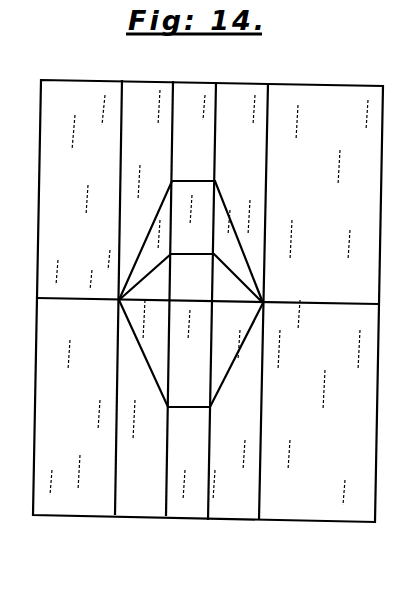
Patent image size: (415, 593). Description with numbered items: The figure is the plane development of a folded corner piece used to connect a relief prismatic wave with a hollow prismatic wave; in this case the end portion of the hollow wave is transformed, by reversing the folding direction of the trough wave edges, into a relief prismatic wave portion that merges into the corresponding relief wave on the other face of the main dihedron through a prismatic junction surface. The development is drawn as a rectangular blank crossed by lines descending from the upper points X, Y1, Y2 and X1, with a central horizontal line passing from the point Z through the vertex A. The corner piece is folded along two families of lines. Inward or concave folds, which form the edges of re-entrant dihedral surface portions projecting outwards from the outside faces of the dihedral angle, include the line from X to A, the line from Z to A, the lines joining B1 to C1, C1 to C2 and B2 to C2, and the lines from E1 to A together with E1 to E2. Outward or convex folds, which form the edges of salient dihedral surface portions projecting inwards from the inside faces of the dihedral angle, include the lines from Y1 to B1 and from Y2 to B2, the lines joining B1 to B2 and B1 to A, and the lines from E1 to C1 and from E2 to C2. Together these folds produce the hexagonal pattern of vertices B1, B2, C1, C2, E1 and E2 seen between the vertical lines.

The fold line end point X is at (124, 69).
The fold line end point Y1 is at (173, 70).
The fold line end point Y2 is at (215, 70).
The fold line end point X1 is at (273, 71).
The fold vertex A is at (103, 288).
The fold vertex B1 is at (156, 177).
The fold vertex B2 is at (229, 177).
The fold vertex C1 is at (159, 247).
The fold vertex C2 is at (226, 248).
The fold vertex E1 is at (151, 409).
The fold vertex E2 is at (226, 409).
The fold line end point Z is at (46, 288).